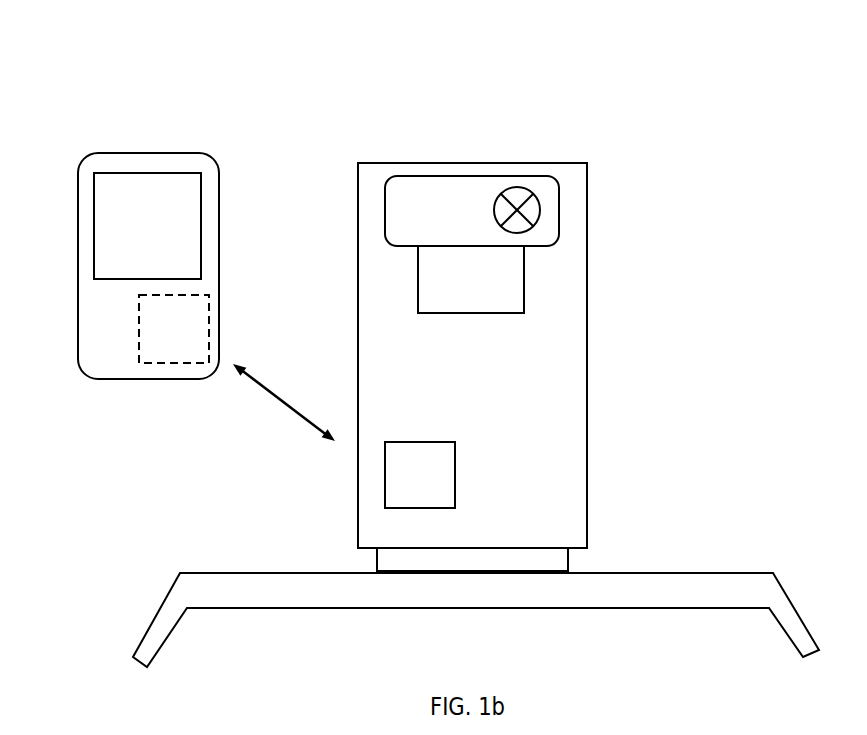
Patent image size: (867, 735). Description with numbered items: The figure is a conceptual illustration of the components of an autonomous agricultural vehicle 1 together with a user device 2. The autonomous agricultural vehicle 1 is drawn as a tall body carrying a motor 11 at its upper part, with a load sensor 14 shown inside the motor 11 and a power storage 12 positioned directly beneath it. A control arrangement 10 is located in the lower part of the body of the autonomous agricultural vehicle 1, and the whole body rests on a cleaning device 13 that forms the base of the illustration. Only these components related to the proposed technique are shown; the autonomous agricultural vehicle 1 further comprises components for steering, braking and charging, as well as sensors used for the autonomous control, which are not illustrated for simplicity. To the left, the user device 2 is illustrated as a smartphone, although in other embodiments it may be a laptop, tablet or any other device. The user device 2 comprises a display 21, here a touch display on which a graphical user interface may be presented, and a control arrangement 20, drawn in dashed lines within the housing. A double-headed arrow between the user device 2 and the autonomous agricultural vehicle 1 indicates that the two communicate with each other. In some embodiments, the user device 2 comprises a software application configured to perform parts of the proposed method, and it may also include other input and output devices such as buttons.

The autonomous agricultural vehicle 1 is at (300, 167).
The user device 2 is at (68, 150).
The control arrangement 10 is at (424, 481).
The motor 11 is at (426, 210).
The power storage 12 is at (458, 287).
The cleaning device 13 is at (292, 612).
The load sensor 14 is at (537, 198).
The control arrangement 20 is at (179, 340).
The display 21 is at (130, 206).